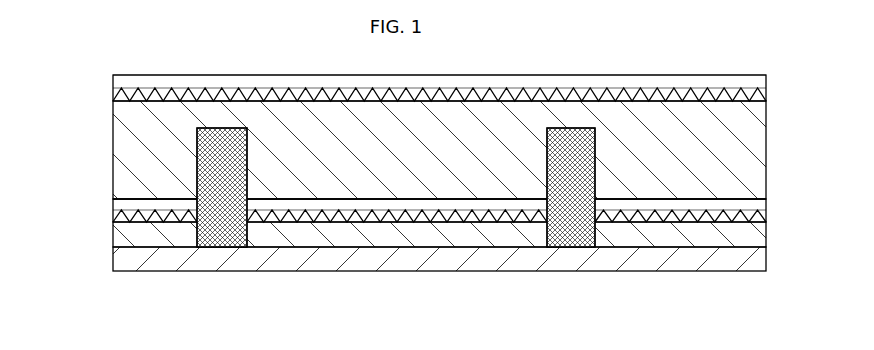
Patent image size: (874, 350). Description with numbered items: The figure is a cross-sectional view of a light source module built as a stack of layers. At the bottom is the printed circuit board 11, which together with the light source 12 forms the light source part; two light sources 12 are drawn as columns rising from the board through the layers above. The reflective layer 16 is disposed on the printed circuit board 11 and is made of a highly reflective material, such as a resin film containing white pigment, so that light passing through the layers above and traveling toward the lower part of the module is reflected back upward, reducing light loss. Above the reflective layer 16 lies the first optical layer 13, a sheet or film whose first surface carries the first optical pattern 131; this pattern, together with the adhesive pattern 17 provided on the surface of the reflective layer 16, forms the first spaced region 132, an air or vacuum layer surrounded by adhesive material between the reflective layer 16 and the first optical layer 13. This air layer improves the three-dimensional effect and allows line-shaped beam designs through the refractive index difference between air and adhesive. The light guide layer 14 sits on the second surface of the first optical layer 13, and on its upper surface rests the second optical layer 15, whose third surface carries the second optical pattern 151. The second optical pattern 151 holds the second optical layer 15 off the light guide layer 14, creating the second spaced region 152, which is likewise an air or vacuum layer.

The printed circuit board 11 is at (766, 261).
The light source 12 is at (218, 245).
The first optical layer 13 is at (766, 205).
The first optical pattern 131 is at (705, 217).
The first spaced region 132 is at (690, 206).
The light guide layer 14 is at (766, 148).
The second optical layer 15 is at (766, 82).
The second optical pattern 151 is at (128, 97).
The second spaced region 152 is at (141, 103).
The reflective layer 16 is at (766, 232).
The adhesive pattern 17 is at (113, 200).